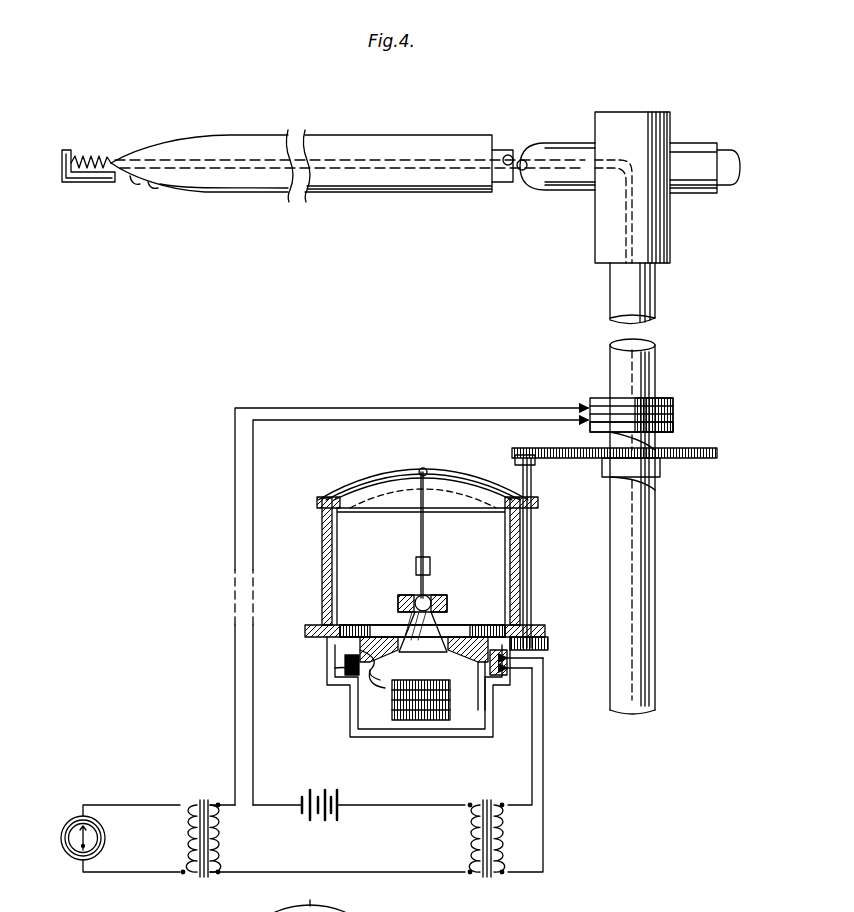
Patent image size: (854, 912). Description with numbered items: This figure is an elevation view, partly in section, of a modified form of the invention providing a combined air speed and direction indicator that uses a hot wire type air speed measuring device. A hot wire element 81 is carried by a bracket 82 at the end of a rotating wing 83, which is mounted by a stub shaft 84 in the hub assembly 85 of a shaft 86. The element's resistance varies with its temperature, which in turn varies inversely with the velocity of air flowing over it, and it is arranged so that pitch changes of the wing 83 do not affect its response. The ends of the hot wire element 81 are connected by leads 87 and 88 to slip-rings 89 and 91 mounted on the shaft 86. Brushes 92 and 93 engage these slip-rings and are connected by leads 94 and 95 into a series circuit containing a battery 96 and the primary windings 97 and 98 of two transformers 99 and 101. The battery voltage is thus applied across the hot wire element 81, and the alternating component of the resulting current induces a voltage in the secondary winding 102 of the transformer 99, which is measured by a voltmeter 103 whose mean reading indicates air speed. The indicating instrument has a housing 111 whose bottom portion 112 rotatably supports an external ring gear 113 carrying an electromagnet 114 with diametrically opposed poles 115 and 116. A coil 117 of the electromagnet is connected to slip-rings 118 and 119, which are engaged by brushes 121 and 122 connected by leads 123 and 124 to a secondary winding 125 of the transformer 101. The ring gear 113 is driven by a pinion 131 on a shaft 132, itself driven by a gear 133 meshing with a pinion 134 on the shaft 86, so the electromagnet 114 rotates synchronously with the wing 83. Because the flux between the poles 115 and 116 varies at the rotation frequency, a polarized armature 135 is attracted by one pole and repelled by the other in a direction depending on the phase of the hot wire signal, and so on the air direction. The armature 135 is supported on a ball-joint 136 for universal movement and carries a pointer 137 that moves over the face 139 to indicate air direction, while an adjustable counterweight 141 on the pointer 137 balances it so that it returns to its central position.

The hot wire element 81 is at (88, 160).
The bracket 82 is at (78, 182).
The rotating wing 83 is at (210, 194).
The stub shaft 84 is at (530, 148).
The hub assembly 85 is at (650, 112).
The shaft 86 is at (656, 366).
The lead 87 is at (297, 138).
The lead 88 is at (304, 192).
The slip-ring 89 is at (673, 410).
The slip-ring 91 is at (673, 428).
The brush 92 is at (572, 406).
The brush 93 is at (580, 426).
The lead 94 is at (320, 407).
The lead 95 is at (304, 420).
The battery 96 is at (341, 796).
The primary winding 97 is at (216, 874).
The primary winding 98 is at (466, 842).
The transformer 99 is at (202, 878).
The transformer 101 is at (494, 876).
The secondary winding 102 is at (184, 805).
The voltmeter 103 is at (62, 834).
The housing 111 is at (322, 566).
The bottom portion 112 is at (486, 700).
The external ring gear 113 is at (488, 624).
The electromagnet 114 is at (485, 717).
The pole 115 is at (370, 637).
The pole 116 is at (478, 637).
The coil 117 is at (426, 722).
The slip-ring 118 is at (327, 665).
The slip-ring 119 is at (330, 680).
The brush 121 is at (527, 657).
The brush 122 is at (520, 670).
The lead 123 is at (544, 758).
The lead 124 is at (540, 728).
The secondary winding 125 is at (506, 848).
The pinion 131 is at (545, 637).
The shaft 132 is at (532, 526).
The gear 133 is at (524, 448).
The pinion 134 is at (708, 458).
The polarized armature 135 is at (425, 645).
The ball-joint 136 is at (432, 598).
The pointer 137 is at (430, 474).
The face 139 is at (372, 480).
The adjustable counterweight 141 is at (415, 568).